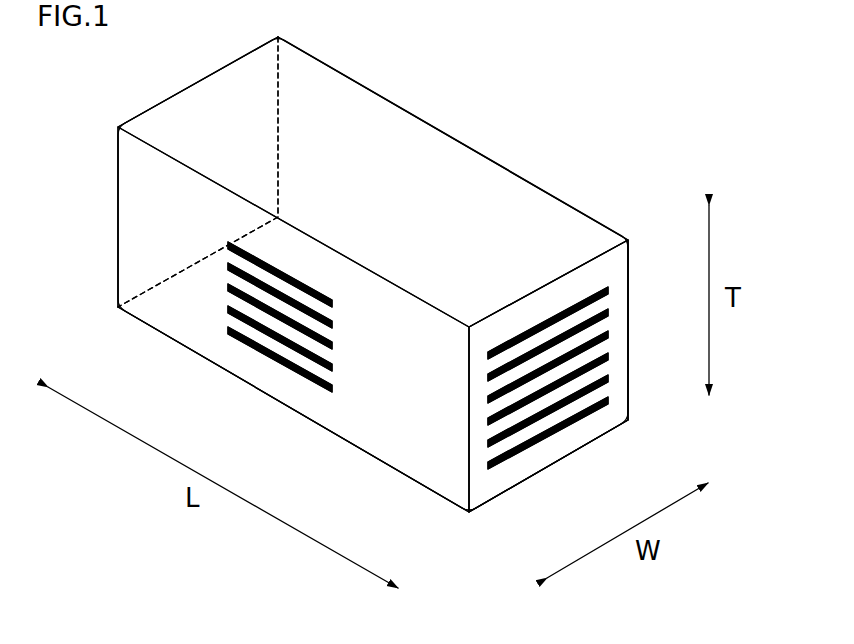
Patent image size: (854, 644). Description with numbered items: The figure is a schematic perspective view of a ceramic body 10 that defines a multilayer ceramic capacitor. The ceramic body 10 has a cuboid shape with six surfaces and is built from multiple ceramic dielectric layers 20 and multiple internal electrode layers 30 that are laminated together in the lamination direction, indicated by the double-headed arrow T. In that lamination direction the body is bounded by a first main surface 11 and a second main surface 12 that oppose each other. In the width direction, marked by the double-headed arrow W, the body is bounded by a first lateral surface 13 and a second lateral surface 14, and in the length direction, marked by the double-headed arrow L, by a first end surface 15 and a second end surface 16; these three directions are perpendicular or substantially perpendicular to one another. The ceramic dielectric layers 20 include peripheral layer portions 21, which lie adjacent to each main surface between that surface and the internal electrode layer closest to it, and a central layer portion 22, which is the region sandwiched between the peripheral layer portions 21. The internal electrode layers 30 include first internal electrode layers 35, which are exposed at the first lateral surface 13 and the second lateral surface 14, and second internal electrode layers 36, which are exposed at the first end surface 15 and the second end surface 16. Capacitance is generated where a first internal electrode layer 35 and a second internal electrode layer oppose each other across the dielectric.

The ceramic body 10 is at (630, 133).
The first main surface 11 is at (398, 112).
The second main surface 12 is at (382, 420).
The first lateral surface 13 is at (175, 312).
The second lateral surface 14 is at (483, 197).
The first end surface 15 is at (138, 178).
The second end surface 16 is at (618, 310).
The ceramic dielectric layers 20 is at (442, 346).
The peripheral layer portions 21 is at (582, 283).
The central layer portion 22 is at (250, 303).
The internal electrode layers 30 is at (448, 403).
The first internal electrode layers 35 is at (310, 356).
The second internal electrode layers 36 is at (552, 410).